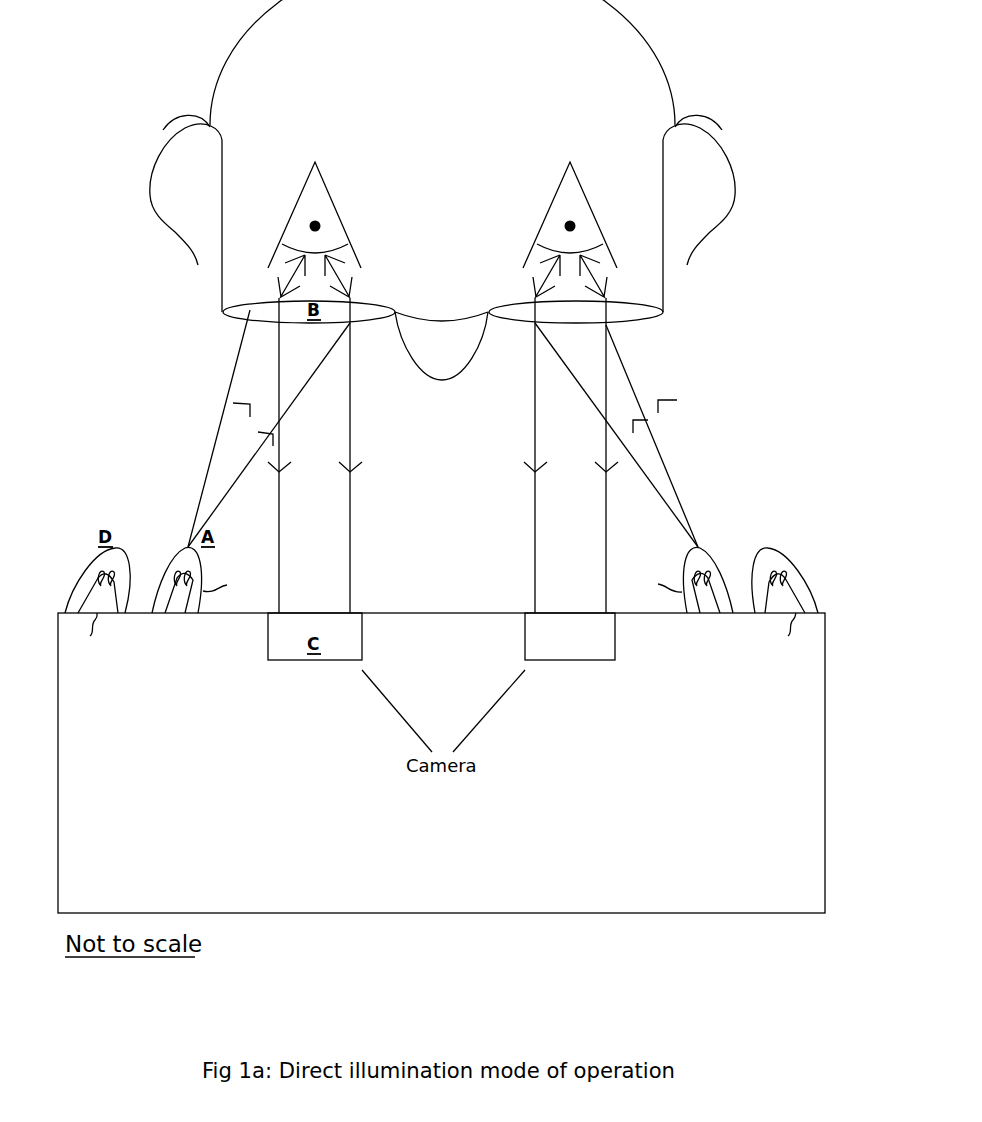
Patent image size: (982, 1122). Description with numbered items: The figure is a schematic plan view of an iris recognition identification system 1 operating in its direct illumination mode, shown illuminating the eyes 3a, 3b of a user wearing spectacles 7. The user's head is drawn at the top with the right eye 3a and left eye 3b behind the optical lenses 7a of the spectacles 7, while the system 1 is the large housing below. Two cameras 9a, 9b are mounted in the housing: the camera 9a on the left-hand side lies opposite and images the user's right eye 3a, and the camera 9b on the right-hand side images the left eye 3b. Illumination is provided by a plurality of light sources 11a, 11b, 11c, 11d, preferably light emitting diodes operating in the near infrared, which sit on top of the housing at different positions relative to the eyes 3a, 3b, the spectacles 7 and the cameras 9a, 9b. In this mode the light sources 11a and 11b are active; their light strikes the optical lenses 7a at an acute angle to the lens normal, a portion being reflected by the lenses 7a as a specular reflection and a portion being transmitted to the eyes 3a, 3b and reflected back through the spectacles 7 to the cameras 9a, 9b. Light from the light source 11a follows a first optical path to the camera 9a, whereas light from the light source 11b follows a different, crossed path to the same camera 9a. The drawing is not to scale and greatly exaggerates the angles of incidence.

The iris recognition identification system 1 is at (640, 914).
The right eye 3a is at (290, 208).
The left eye 3b is at (595, 208).
The spectacles 7 is at (507, 328).
The optical lenses 7a is at (248, 316).
The camera 9a is at (290, 661).
The camera 9b is at (593, 661).
The light source 11a is at (187, 547).
The light source 11b is at (99, 550).
The light source 11c is at (777, 551).
The light source 11d is at (703, 548).